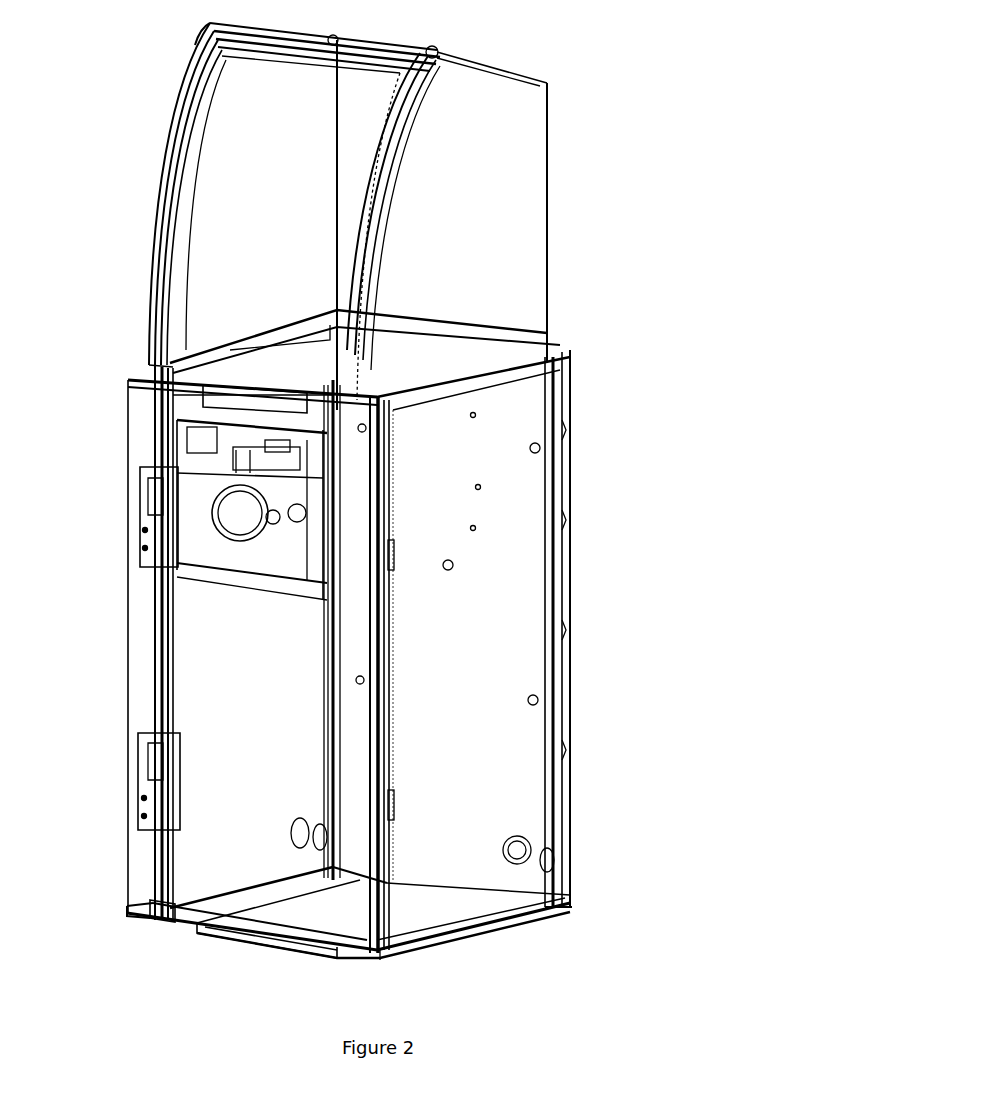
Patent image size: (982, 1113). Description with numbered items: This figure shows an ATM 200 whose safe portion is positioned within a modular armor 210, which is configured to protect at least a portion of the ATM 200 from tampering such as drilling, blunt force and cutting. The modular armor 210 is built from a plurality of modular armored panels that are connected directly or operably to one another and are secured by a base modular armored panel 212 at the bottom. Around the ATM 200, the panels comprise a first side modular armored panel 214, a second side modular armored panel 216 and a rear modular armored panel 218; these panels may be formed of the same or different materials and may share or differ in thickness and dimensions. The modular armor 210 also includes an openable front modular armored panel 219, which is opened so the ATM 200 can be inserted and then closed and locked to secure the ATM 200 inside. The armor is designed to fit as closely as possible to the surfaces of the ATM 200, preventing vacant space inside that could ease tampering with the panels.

The ATM 200 is at (587, 178).
The modular armor 210 is at (398, 668).
The base modular armored panel 212 is at (262, 938).
The first side modular armored panel 214 is at (153, 603).
The second side modular armored panel 216 is at (493, 762).
The rear modular armored panel 218 is at (552, 478).
The openable front modular armored panel 219 is at (147, 892).